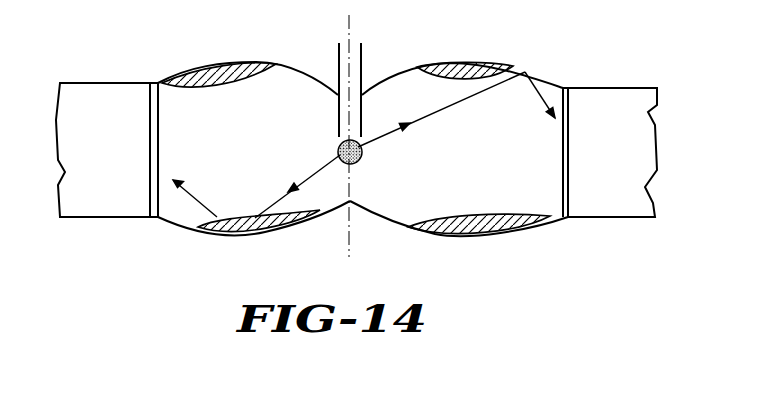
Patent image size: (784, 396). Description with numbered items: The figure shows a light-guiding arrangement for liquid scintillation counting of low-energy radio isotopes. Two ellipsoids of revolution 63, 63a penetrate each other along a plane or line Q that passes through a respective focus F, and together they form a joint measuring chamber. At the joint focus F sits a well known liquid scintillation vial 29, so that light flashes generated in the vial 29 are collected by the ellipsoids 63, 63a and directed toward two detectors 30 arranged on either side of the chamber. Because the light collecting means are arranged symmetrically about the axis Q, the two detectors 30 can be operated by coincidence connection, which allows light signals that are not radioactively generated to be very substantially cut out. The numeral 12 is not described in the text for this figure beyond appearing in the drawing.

The scintillator body 12 is at (366, 190).
The ellipsoid of revolution 63 is at (284, 66).
The ellipsoid of revolution 63a is at (539, 72).
The liquid scintillation vial 29 is at (362, 56).
The plane or line Q is at (350, 27).
The focus F is at (365, 156).
The detector 30 is at (158, 143).